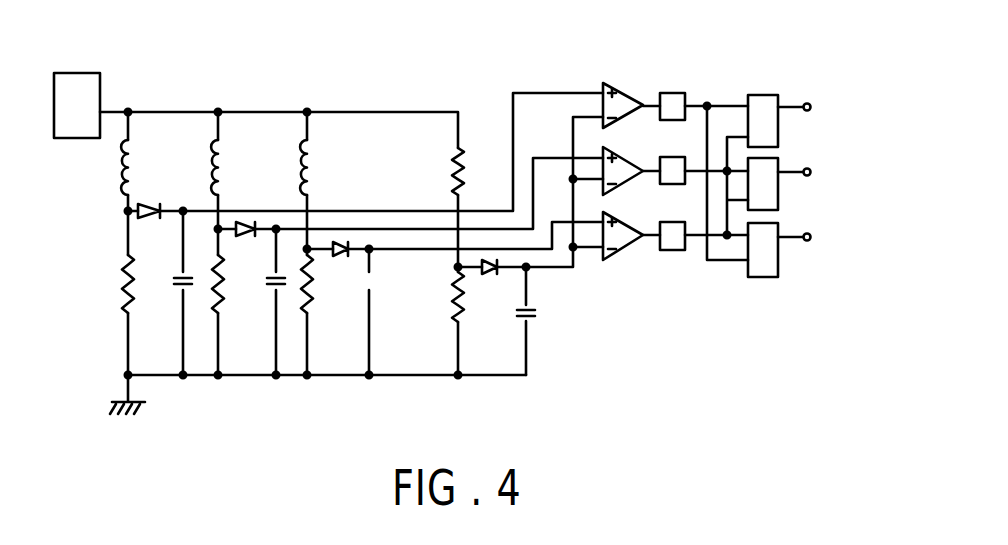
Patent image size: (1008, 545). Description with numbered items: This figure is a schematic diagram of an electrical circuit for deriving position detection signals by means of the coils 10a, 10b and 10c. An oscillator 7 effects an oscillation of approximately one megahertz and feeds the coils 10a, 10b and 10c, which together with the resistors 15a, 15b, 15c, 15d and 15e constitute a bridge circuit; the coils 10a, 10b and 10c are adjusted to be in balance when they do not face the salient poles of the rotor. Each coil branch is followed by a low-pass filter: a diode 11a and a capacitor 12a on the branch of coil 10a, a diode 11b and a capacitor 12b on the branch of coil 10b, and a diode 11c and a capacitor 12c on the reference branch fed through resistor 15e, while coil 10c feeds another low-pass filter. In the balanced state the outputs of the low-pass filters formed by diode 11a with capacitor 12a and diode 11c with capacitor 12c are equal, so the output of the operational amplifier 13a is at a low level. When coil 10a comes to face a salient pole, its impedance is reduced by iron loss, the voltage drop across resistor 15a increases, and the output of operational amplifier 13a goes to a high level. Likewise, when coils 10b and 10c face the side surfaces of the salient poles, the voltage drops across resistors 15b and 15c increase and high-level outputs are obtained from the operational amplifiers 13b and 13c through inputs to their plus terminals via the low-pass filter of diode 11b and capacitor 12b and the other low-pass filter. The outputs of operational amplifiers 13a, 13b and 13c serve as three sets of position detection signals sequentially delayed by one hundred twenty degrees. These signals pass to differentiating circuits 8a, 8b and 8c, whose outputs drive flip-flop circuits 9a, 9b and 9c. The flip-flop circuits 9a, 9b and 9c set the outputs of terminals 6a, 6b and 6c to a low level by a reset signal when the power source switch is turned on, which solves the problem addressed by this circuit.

The oscillator 7 is at (88, 73).
The coil 10a is at (130, 152).
The coil 10b is at (220, 152).
The coil 10c is at (309, 152).
The resistor 15d is at (452, 170).
The resistor 15a is at (123, 285).
The resistor 15b is at (213, 300).
The resistor 15c is at (312, 300).
The resistor 15e is at (455, 290).
The diode 11a is at (152, 218).
The diode 11b is at (246, 236).
The diode 11c is at (490, 274).
The capacitor 12a is at (176, 294).
The capacitor 12b is at (269, 294).
The capacitor 12c is at (536, 310).
The operational amplifier 13a is at (620, 83).
The operational amplifier 13b is at (636, 134).
The operational amplifier 13c is at (620, 255).
The differentiating circuit 8a is at (676, 93).
The differentiating circuit 8b is at (672, 157).
The differentiating circuit 8c is at (672, 250).
The flip-flop circuit 9a is at (758, 95).
The flip-flop circuit 9b is at (778, 190).
The flip-flop circuit 9c is at (763, 277).
The terminal 6a is at (809, 103).
The terminal 6b is at (810, 169).
The terminal 6c is at (810, 240).